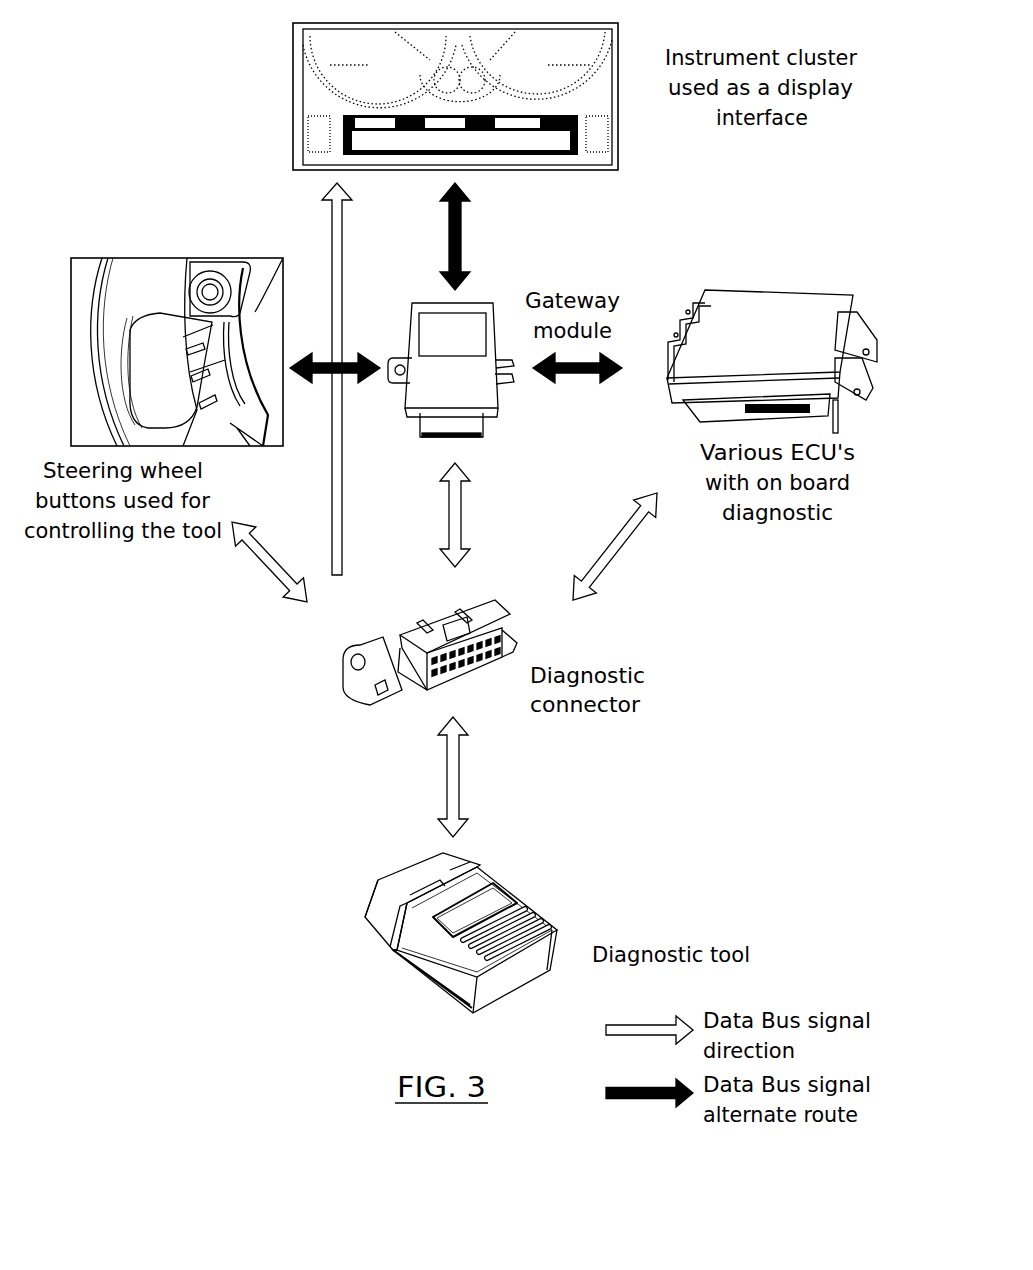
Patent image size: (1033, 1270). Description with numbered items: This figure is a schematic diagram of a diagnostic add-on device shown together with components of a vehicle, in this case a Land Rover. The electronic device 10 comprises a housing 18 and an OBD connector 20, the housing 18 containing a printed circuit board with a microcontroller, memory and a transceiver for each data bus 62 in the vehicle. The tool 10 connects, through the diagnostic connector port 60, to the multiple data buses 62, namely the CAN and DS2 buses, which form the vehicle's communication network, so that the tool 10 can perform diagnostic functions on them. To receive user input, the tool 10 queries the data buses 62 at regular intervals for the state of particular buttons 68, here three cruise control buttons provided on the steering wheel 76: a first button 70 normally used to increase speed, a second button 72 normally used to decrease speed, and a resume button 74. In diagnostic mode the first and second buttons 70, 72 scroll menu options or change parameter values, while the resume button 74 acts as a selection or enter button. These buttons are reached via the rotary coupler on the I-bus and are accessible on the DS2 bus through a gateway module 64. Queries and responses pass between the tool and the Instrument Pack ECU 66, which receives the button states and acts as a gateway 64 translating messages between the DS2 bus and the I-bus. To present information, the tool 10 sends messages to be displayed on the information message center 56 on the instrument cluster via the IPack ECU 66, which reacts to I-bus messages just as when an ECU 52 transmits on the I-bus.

The electronic device 10 is at (430, 922).
The housing 18 is at (383, 977).
The OBD connector 20 is at (333, 895).
The ECU 52 is at (783, 262).
The user interface 56 is at (250, 72).
The diagnostic connector port 60 is at (535, 645).
The data bus 62 is at (343, 225).
The gateway module 64 is at (462, 323).
The Instrument Pack (IPack) ECU 66 is at (588, 160).
The buttons 68 is at (173, 182).
The first button 70 is at (198, 333).
The second button 72 is at (202, 362).
The resume button 74 is at (207, 385).
The steering wheel 76 is at (258, 308).